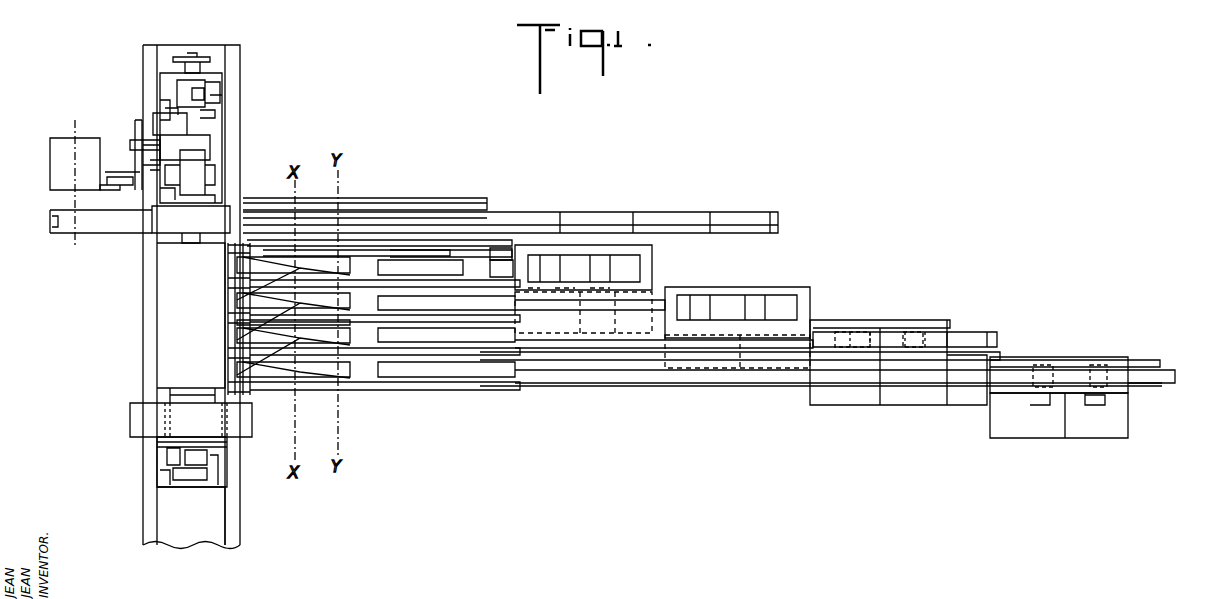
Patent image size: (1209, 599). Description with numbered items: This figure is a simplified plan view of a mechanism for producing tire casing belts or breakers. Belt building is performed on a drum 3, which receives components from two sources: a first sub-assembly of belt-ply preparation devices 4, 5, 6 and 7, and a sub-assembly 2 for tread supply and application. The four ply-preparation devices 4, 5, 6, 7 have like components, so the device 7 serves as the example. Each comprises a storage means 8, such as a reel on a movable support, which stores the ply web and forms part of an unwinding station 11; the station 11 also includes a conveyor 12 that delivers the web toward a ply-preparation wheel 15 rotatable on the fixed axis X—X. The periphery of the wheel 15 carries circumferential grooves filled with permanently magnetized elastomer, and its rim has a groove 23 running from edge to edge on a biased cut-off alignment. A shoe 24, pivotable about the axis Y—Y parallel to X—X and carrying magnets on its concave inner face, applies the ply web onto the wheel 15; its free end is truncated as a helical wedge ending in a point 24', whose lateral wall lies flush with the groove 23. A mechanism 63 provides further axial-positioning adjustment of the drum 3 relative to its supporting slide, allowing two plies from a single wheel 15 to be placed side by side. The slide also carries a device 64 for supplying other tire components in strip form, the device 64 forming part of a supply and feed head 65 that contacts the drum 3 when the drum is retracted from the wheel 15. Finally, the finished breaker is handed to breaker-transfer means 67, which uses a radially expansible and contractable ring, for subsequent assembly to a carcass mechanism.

The sub-assembly for tread supply and application 2 is at (782, 205).
The drum 3 is at (152, 243).
The belt-ply preparation device 4 is at (1199, 392).
The belt-ply preparation device 5 is at (1008, 337).
The belt-ply preparation device 6 is at (821, 298).
The belt-ply preparation device 7 is at (695, 262).
The storage means 8 is at (1068, 368).
The unwinding station 11 is at (1078, 478).
The conveyor 12 is at (436, 335).
The ply-preparation wheel 15 is at (237, 378).
The groove 23 is at (320, 428).
The shoe 24 is at (363, 309).
The point 24' is at (269, 347).
The mechanism 63 is at (255, 197).
The device 64 is at (120, 165).
The supply and feed head 65 is at (145, 155).
The breaker-transfer means 67 is at (130, 412).